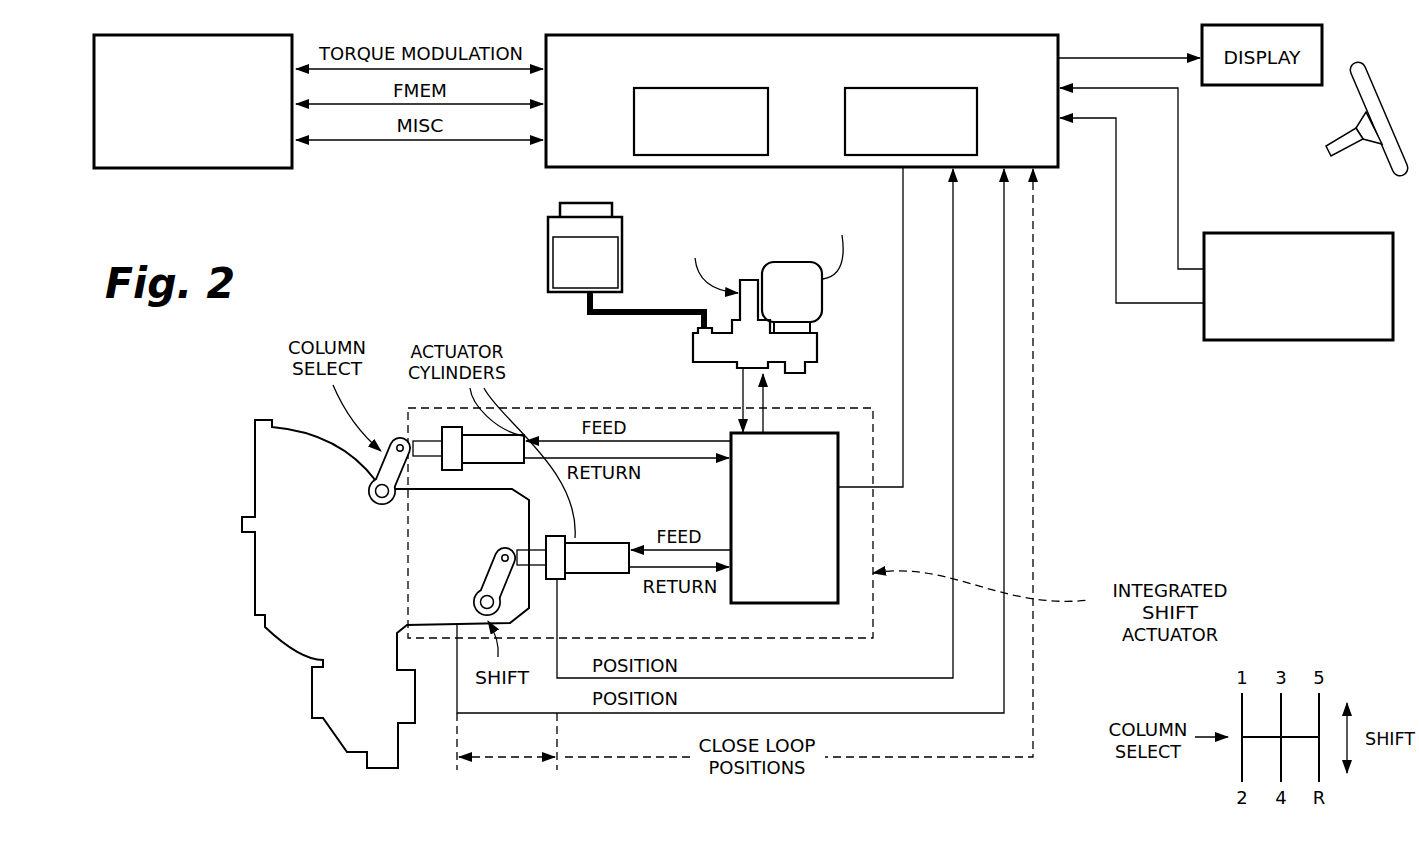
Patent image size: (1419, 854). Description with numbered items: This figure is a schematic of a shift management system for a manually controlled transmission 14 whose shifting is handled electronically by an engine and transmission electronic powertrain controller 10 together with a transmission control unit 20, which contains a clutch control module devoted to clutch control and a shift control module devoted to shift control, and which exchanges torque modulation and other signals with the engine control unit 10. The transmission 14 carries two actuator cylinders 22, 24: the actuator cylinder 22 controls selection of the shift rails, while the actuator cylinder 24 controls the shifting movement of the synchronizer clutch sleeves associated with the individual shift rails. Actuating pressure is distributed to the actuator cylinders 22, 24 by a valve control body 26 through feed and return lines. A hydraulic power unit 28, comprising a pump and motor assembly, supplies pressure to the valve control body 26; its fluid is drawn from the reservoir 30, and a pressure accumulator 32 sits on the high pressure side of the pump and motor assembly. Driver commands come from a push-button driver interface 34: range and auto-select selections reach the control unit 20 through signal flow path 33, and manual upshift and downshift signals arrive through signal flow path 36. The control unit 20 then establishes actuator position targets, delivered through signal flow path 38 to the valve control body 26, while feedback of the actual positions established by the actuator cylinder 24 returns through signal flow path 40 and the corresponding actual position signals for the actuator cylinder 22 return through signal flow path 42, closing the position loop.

The engine and transmission electronic powertrain controller 10 is at (263, 168).
The manually controlled transmission 14 is at (287, 473).
The transmission control unit 20 is at (545, 155).
The actuator cylinder 22 is at (483, 455).
The actuator cylinder 24 is at (590, 568).
The valve control body 26 is at (784, 518).
The hydraulic power unit 28 is at (807, 352).
The fluid reservoir 30 is at (565, 268).
The pressure accumulator 32 is at (790, 288).
The signal flow path 33 is at (1178, 160).
The push-button driver interface 34 is at (1268, 340).
The signal flow path 36 is at (1160, 303).
The signal flow path 38 is at (902, 455).
The signal flow path 40 is at (952, 428).
The signal flow path 42 is at (1004, 422).